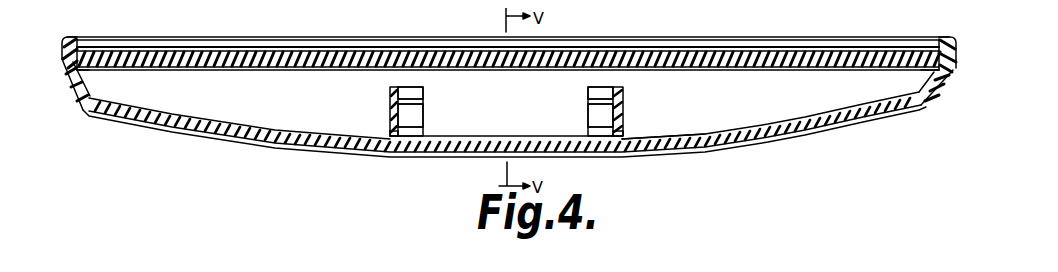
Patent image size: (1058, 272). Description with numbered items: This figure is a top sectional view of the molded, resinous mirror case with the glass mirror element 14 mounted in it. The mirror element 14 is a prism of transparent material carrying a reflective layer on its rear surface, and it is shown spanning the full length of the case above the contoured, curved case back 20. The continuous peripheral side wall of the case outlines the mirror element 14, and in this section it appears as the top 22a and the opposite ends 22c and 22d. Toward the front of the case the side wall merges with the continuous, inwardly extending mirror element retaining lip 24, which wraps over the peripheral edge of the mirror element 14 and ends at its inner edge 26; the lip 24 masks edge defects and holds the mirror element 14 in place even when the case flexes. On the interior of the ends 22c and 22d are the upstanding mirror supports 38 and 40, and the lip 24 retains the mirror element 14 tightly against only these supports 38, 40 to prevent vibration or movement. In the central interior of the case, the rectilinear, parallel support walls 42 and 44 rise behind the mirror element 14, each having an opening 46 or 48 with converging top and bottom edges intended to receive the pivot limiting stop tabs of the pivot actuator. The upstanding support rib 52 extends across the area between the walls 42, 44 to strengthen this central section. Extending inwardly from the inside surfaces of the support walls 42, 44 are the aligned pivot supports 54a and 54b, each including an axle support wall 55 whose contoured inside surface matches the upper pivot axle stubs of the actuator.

The mirror element 14 is at (248, 67).
The case back 20 is at (233, 132).
The top of side wall 22a is at (727, 109).
The end of side wall 22c is at (57, 52).
The end of side wall 22d is at (931, 93).
The mirror element retaining lip 24 is at (66, 31).
The inner edge 26 is at (217, 17).
The mirror support 38 is at (81, 66).
The mirror support 40 is at (919, 67).
The support wall 42 is at (385, 130).
The support wall 44 is at (618, 124).
The opening 46 is at (384, 101).
The opening 48 is at (618, 100).
The support rib 52 is at (533, 132).
The pivot support 54a is at (405, 78).
The pivot support 54b is at (602, 78).
The axle support wall 55 is at (409, 112).